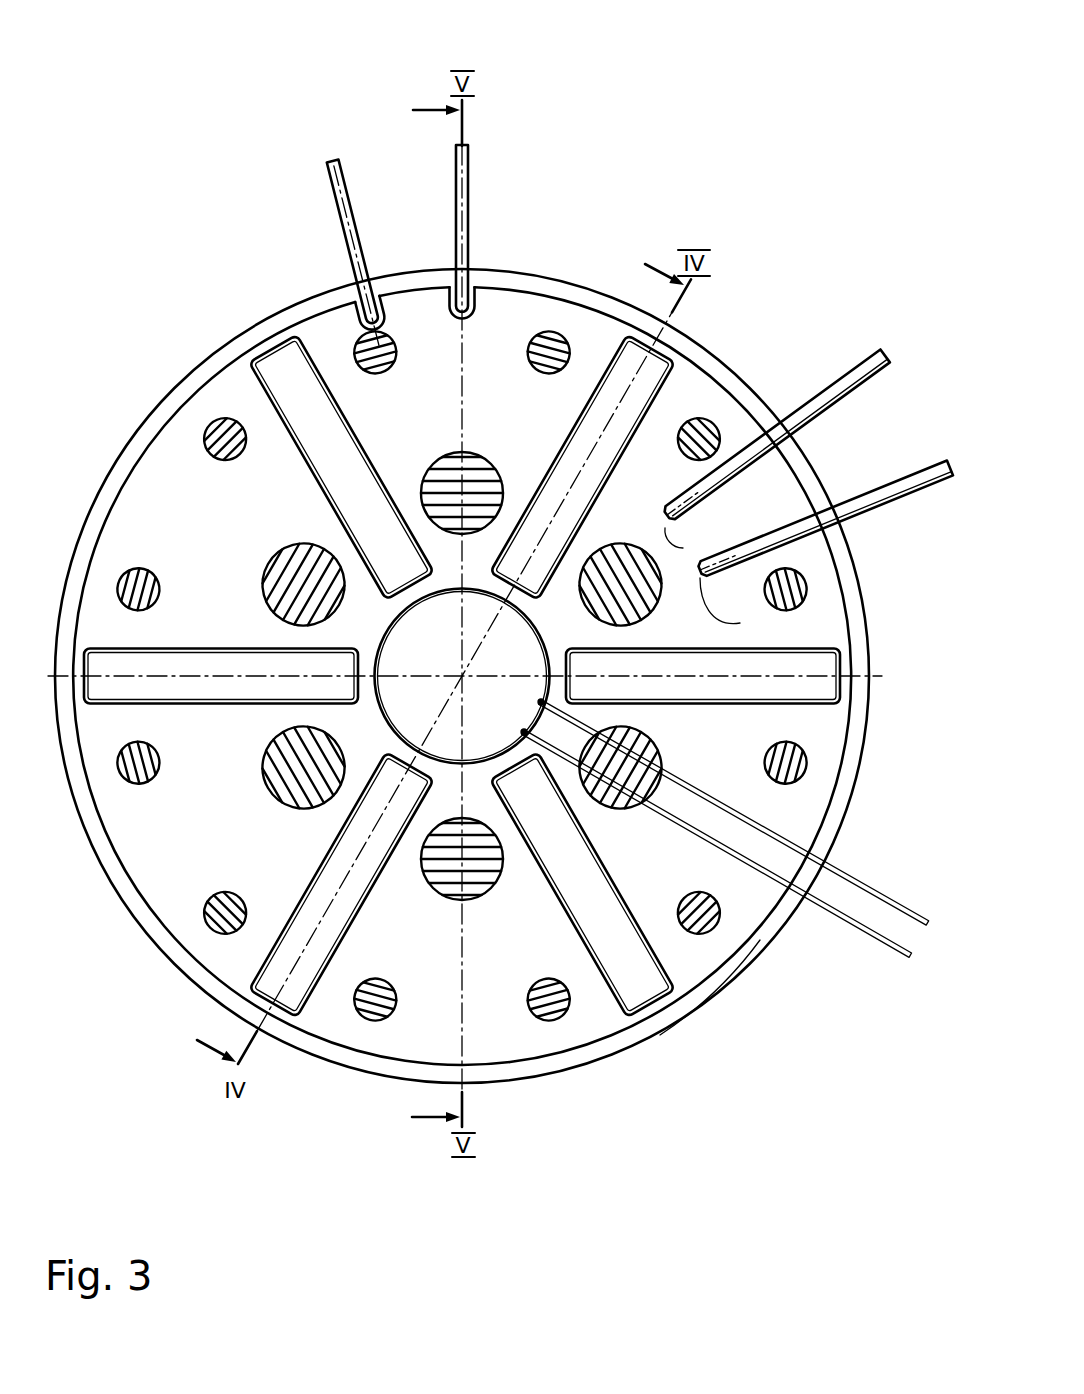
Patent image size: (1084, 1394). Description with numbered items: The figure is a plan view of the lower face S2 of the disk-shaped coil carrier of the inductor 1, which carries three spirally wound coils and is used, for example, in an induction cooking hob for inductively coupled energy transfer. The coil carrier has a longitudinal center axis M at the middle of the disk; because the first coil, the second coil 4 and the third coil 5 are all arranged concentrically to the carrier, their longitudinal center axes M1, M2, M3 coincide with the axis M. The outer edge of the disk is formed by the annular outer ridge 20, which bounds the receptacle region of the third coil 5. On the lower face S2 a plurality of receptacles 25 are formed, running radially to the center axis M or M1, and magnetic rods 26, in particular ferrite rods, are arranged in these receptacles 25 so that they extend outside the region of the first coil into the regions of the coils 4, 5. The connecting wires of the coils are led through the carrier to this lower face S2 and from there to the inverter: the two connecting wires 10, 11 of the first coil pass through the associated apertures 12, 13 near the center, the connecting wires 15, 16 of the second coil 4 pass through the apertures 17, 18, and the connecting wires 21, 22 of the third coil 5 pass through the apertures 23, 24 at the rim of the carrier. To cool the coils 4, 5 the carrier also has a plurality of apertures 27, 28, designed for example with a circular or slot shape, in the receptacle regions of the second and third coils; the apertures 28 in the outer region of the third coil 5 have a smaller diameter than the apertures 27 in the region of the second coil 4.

The inductor 1 is at (268, 200).
The second coil 4 is at (470, 872).
The third coil 5 is at (549, 998).
The connecting wire 10 is at (857, 928).
The connecting wire 11 is at (847, 873).
The aperture 12 is at (524, 733).
The aperture 13 is at (542, 702).
The connecting wire 15 is at (850, 515).
The connecting wire 16 is at (852, 386).
The aperture 17 is at (740, 623).
The aperture 18 is at (683, 548).
The annular outer ridge 20 is at (613, 1045).
The connecting wire 21 is at (468, 207).
The connecting wire 22 is at (334, 165).
The aperture 23 is at (477, 316).
The aperture 24 is at (388, 323).
The receptacle 25 is at (840, 670).
The magnetic rod 26 is at (835, 690).
The aperture 27 is at (637, 611).
The aperture 28 is at (555, 342).
The longitudinal center axis M is at (466, 683).
The longitudinal center axis M1 is at (465, 937).
The longitudinal center axis M2 is at (389, 666).
The longitudinal center axis M3 is at (464, 772).
The lower face S2 is at (721, 965).